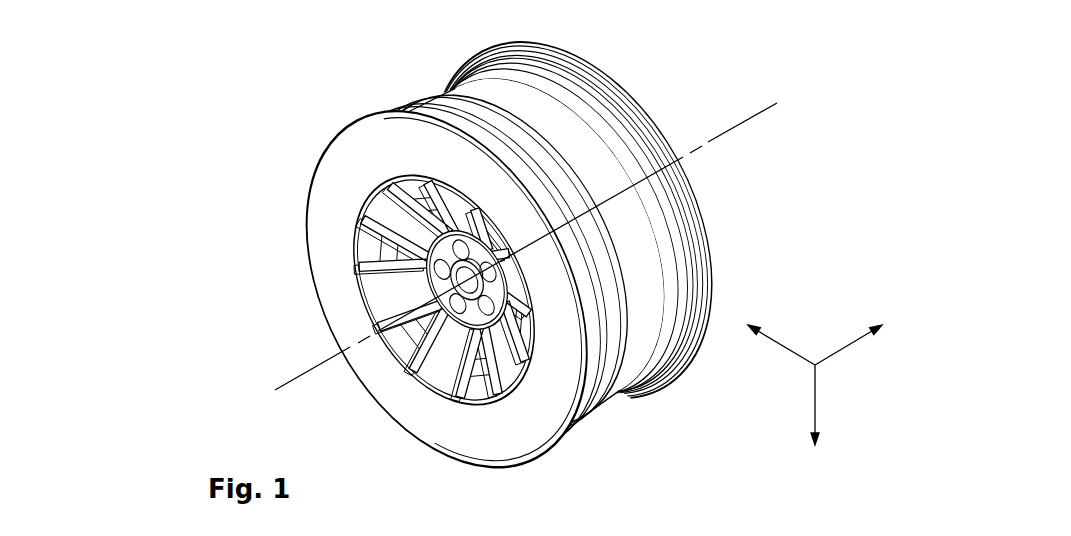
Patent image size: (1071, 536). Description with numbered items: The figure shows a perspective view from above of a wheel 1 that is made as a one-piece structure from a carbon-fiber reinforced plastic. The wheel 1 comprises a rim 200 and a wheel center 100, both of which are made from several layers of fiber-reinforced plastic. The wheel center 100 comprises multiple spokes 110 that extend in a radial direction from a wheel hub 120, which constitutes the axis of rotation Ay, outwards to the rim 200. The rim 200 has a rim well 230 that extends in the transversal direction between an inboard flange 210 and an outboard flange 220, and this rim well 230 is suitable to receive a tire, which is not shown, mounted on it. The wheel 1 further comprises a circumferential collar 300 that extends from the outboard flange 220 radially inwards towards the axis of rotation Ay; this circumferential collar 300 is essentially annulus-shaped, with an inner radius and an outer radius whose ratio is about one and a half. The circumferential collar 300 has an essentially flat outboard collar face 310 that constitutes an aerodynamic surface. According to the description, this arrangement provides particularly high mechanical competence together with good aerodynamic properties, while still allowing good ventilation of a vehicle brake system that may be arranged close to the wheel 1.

The wheel 1 is at (472, 257).
The wheel center 100 is at (310, 306).
The spokes 110 is at (357, 216).
The wheel hub 120 is at (468, 280).
The rim 200 is at (409, 257).
The inboard flange 210 is at (514, 43).
The outboard flange 220 is at (347, 289).
The rim well 230 is at (537, 172).
The circumferential collar 300 is at (398, 382).
The outboard collar face 310 is at (335, 247).
The axis of rotation Ay is at (733, 130).